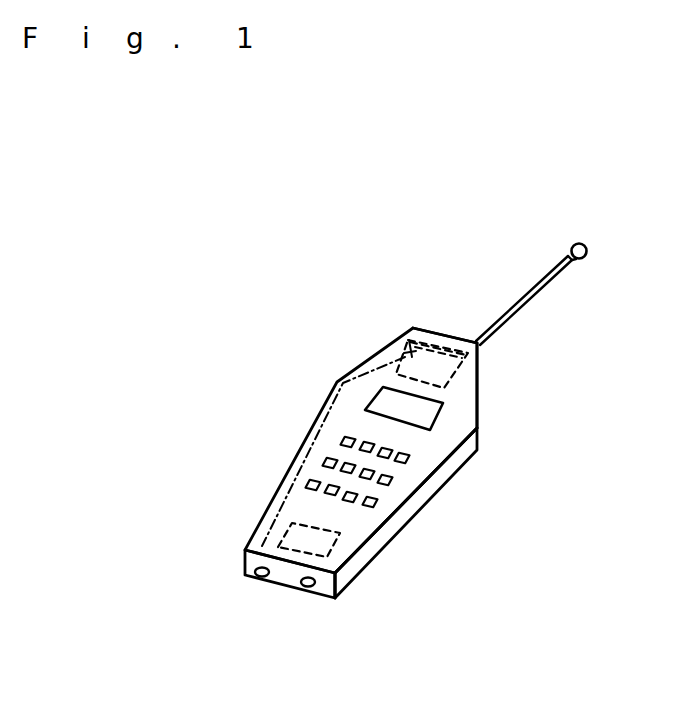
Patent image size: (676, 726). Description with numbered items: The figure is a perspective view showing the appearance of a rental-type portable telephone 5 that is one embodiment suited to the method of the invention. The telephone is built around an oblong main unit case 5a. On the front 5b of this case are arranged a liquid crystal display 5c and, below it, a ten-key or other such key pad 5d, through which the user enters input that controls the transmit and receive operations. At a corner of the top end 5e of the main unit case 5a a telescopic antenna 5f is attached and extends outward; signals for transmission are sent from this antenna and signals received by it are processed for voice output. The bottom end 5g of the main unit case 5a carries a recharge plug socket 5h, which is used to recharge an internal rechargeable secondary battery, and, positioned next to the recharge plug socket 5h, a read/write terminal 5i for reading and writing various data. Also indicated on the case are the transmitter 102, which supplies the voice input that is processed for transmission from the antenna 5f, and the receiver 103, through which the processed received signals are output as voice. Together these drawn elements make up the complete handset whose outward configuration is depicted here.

The rental-type portable telephone 5 is at (505, 419).
The main unit case 5a is at (443, 483).
The front 5b is at (403, 485).
The liquid crystal display 5c is at (380, 393).
The key pad 5d is at (347, 502).
The top end 5e is at (448, 337).
The telescopic antenna 5f is at (537, 298).
The bottom end 5g is at (323, 595).
The recharge plug socket 5h is at (258, 578).
The read/write terminal 5i is at (303, 590).
The transmitter 102 is at (277, 518).
The receiver 103 is at (402, 330).